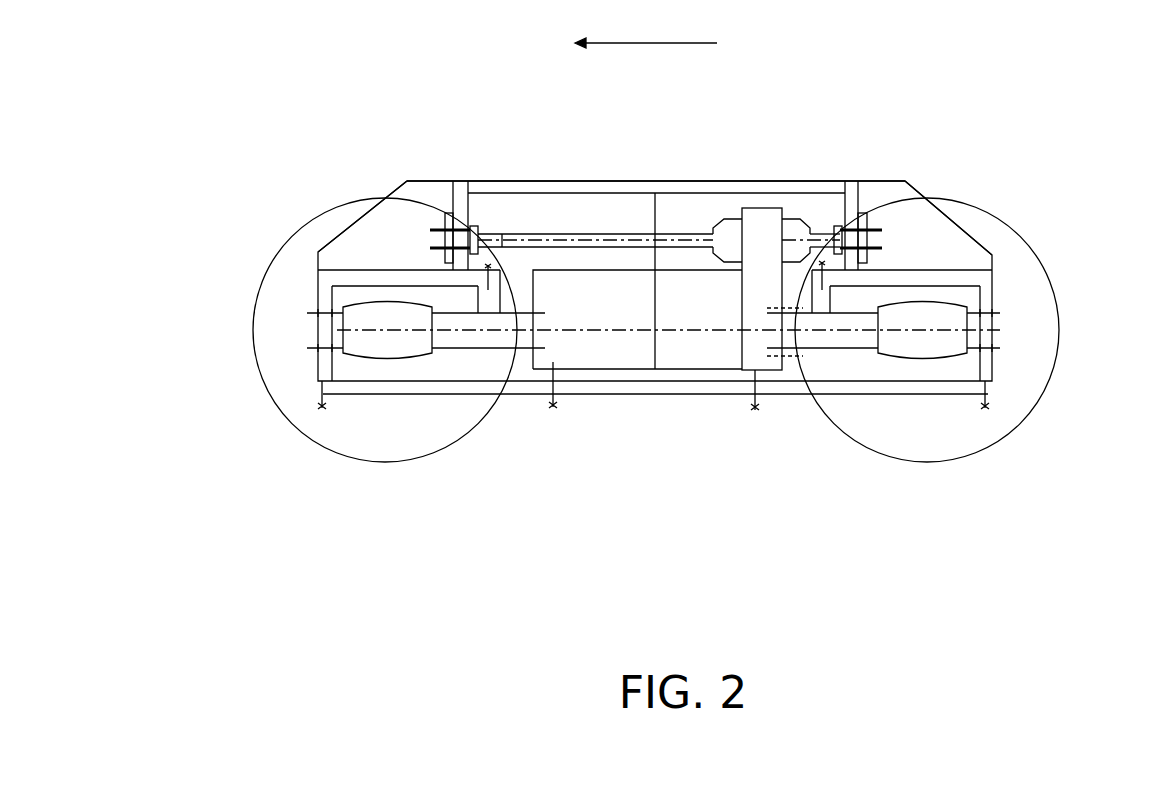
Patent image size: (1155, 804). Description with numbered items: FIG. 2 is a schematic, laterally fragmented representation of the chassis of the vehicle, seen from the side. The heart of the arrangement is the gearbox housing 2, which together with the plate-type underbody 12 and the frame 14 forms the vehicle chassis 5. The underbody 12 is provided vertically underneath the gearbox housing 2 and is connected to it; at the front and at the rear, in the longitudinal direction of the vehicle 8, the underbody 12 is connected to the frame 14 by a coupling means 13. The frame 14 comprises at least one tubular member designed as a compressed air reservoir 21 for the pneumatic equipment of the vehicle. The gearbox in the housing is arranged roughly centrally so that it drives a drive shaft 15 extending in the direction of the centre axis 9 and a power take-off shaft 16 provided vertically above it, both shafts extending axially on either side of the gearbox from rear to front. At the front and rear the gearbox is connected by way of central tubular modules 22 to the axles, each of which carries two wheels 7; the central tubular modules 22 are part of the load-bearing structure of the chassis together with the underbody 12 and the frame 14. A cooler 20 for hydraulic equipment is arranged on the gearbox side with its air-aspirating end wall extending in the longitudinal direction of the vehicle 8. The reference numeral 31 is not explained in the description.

The gearbox housing 2 is at (592, 318).
The vehicle chassis 5 is at (793, 180).
The wheels 7 is at (258, 332).
The longitudinal direction of the vehicle 8 is at (646, 27).
The centre axis 9 is at (968, 332).
The underbody 12 is at (925, 393).
The coupling means 13 is at (656, 225).
The frame 14 is at (508, 188).
The drive shaft 15 is at (686, 340).
The power take-off shaft 16 is at (683, 230).
The cooler for hydraulic equipment 20 is at (822, 338).
The compressed air reservoir 21 is at (630, 185).
The central tubular modules 22 is at (462, 337).
The side wall 31 is at (378, 218).